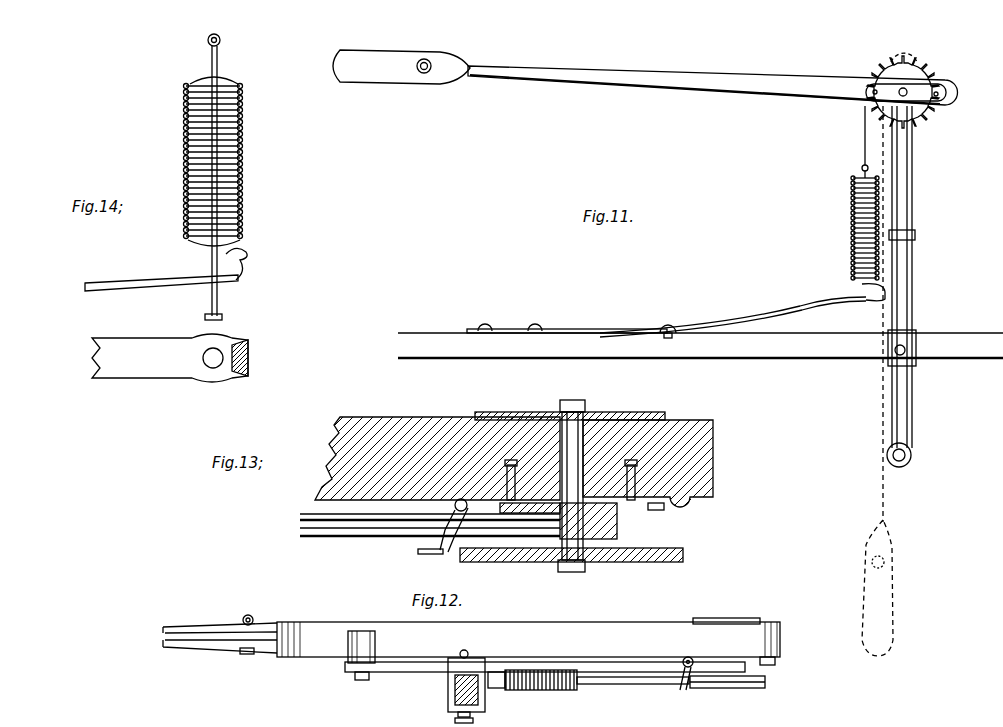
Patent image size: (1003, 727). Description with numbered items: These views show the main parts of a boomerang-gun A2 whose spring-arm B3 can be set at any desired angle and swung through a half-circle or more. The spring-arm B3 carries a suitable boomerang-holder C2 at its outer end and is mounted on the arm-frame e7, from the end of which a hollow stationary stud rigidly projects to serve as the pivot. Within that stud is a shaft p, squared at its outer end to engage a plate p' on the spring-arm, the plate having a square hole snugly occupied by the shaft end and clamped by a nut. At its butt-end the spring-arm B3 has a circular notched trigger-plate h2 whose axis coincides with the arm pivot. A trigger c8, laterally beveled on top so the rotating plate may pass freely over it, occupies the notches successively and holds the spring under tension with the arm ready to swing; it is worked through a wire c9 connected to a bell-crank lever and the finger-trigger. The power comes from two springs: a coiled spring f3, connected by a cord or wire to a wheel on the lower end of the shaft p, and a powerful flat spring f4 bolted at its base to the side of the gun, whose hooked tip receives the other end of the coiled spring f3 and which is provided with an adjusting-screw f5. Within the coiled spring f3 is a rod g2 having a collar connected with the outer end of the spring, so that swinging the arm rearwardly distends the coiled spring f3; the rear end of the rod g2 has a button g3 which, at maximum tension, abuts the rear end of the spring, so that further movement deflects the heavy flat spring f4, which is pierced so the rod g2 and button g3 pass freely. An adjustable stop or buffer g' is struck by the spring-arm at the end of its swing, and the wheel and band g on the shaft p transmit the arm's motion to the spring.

In FIG. 11, the boomerang-holder C2 is at (410, 52).
In FIG. 12, the boomerang-holder C2 is at (205, 626).
In FIG. 11, the spring-arm B3 is at (615, 72).
In FIG. 13, the spring-arm B3 is at (424, 417).
In FIG. 12, the spring-arm B3 is at (528, 639).
In FIG. 11, the plate p' is at (895, 67).
In FIG. 13, the plate p' is at (570, 477).
In FIG. 12, the plate p' is at (733, 609).
In FIG. 11, the notched trigger-plate h2 is at (920, 68).
In FIG. 13, the notched trigger-plate h2 is at (658, 512).
In FIG. 12, the notched trigger-plate h2 is at (774, 666).
In FIG. 11, the rod / bar g is at (903, 381).
In FIG. 13, the rod / bar g is at (584, 558).
In FIG. 12, the rod / bar g is at (731, 693).
In FIG. 11, the adjustable stop or buffer g' is at (888, 286).
In FIG. 12, the adjustable stop or buffer g' is at (346, 659).
In FIG. 14, the spring rod / hook g2 is at (214, 264).
In FIG. 11, the spring rod / hook g2 is at (862, 178).
In FIG. 14, the hook / nut g3 is at (222, 318).
In FIG. 11, the hook / nut g3 is at (862, 287).
In FIG. 14, the coiled spring f3 is at (244, 158).
In FIG. 11, the coiled spring f3 is at (851, 226).
In FIG. 14, the flat spring f4 is at (118, 283).
In FIG. 11, the flat spring f4 is at (790, 300).
In FIG. 11, the adjusting-screw f5 is at (668, 324).
In FIG. 11, the gun A2 is at (480, 328).
In FIG. 12, the gun A2 is at (448, 692).
In FIG. 13, the arm-frame e7 is at (300, 520).
In FIG. 12, the arm-frame e7 is at (545, 678).
In FIG. 13, the trigger c8 is at (480, 500).
In FIG. 12, the trigger c8 is at (682, 690).
In FIG. 13, the wire c9 is at (430, 556).
In FIG. 12, the wire c9 is at (636, 684).
In FIG. 13, the shaft p is at (571, 465).